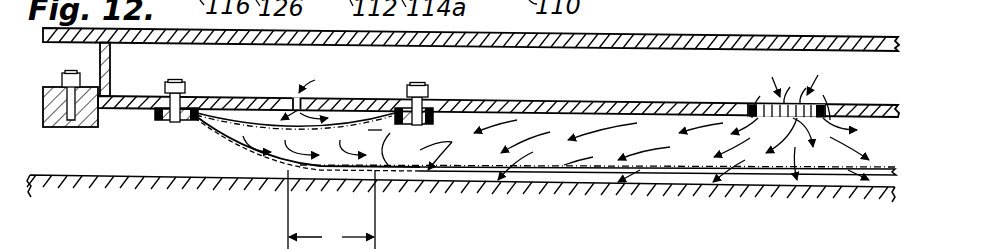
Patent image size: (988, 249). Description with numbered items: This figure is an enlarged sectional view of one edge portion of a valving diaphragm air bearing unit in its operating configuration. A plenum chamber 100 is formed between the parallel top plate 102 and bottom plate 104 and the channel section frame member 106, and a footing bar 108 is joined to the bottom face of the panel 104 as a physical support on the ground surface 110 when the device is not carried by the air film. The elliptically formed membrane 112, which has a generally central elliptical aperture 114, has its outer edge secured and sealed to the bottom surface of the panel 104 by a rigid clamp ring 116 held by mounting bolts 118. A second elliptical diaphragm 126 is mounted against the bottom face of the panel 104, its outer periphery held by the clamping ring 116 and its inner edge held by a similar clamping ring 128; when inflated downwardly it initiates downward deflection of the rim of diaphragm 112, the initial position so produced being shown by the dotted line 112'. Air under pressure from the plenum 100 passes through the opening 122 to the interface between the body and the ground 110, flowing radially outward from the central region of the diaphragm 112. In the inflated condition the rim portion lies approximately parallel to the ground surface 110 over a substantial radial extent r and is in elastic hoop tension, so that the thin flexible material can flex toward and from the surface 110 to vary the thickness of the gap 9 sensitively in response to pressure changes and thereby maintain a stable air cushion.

The plenum chamber 100 is at (567, 75).
The top plate 102 is at (710, 50).
The bottom plate 104 is at (642, 99).
The channel section frame member 106 is at (110, 64).
The footing bar 108 is at (43, 112).
The ground surface 110 is at (117, 176).
The membrane 112 is at (306, 171).
The initial positioning of diaphragm 112' is at (305, 95).
The central elliptical aperture 114 is at (527, 173).
The rigid clamp ring 116 is at (152, 122).
The mounting bolt 118 is at (196, 70).
The opening 122 is at (810, 92).
The second elliptical diaphragm 126 is at (251, 97).
The clamping ring 128 is at (452, 108).
The gap 9 is at (352, 173).
The radial extent r is at (331, 209).